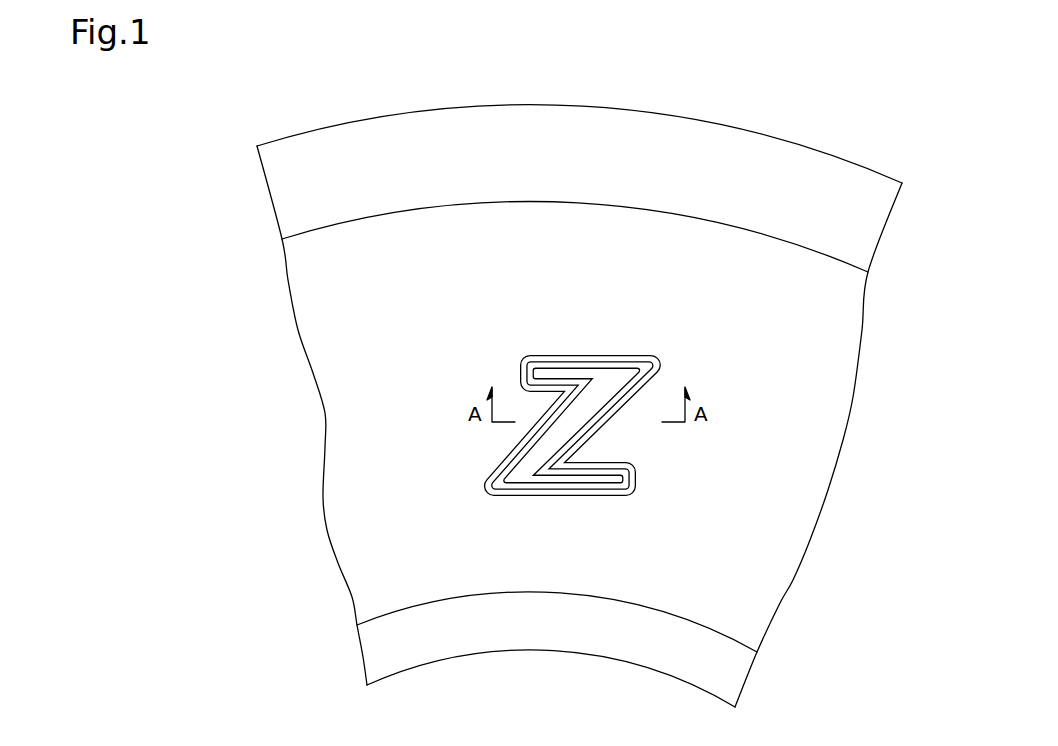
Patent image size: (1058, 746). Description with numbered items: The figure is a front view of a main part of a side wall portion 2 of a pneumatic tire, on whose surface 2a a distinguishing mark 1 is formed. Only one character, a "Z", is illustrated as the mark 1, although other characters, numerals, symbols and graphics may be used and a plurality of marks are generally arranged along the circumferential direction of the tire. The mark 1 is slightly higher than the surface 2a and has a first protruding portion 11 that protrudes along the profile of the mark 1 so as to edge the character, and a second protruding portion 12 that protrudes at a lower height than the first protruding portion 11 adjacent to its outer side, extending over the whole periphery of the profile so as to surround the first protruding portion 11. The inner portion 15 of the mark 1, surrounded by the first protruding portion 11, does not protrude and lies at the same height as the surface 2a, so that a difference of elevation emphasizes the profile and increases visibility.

The distinguishing mark 1 is at (539, 503).
The side wall portion 2 is at (561, 406).
The surface of side wall portion 2a is at (787, 382).
The first protruding portion 11 is at (585, 367).
The second protruding portion 12 is at (637, 362).
The inner portion 15 is at (545, 458).